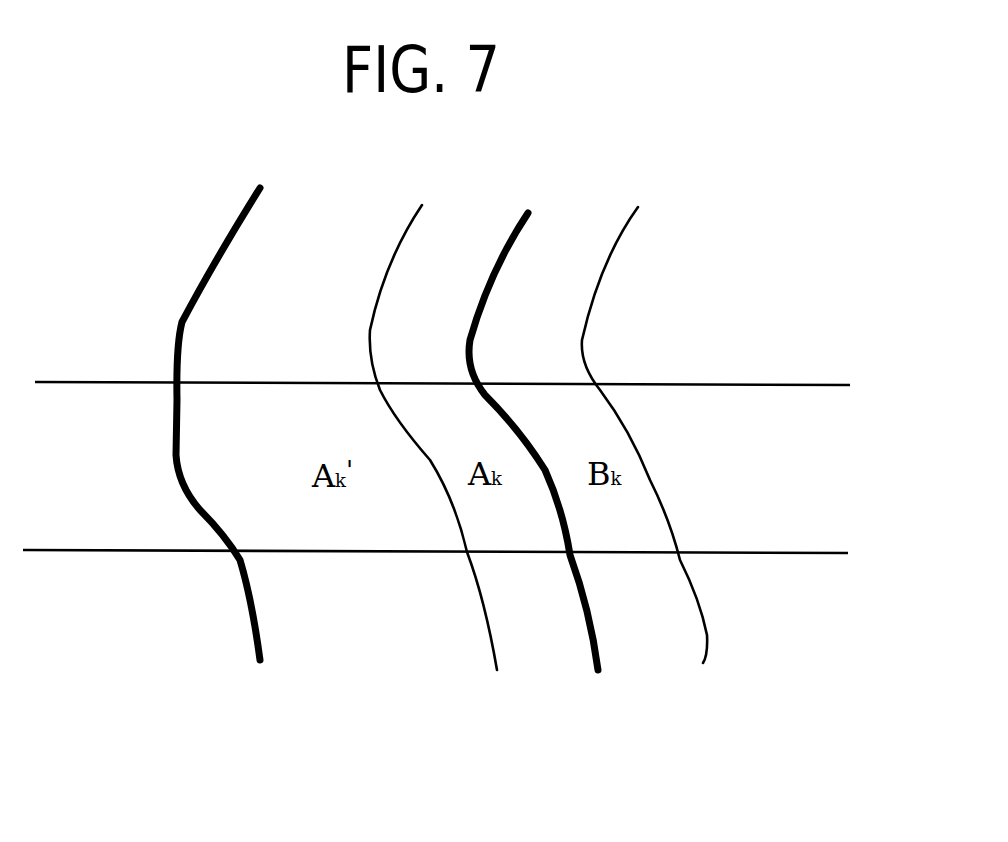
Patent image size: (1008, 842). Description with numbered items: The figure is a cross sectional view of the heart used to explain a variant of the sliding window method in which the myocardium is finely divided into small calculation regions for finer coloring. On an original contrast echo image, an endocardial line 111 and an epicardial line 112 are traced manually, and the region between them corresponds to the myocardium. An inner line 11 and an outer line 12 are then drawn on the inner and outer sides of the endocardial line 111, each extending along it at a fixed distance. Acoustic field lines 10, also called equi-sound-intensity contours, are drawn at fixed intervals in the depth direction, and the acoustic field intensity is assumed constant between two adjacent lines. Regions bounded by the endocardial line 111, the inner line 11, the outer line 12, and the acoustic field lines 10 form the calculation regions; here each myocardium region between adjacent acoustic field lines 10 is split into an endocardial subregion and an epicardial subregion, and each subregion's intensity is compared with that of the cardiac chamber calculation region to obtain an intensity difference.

The acoustic field lines 10 is at (480, 464).
The inner line 11 is at (648, 461).
The outer line 12 is at (438, 463).
The endocardial line 111 is at (548, 469).
The epicardial line 112 is at (229, 448).